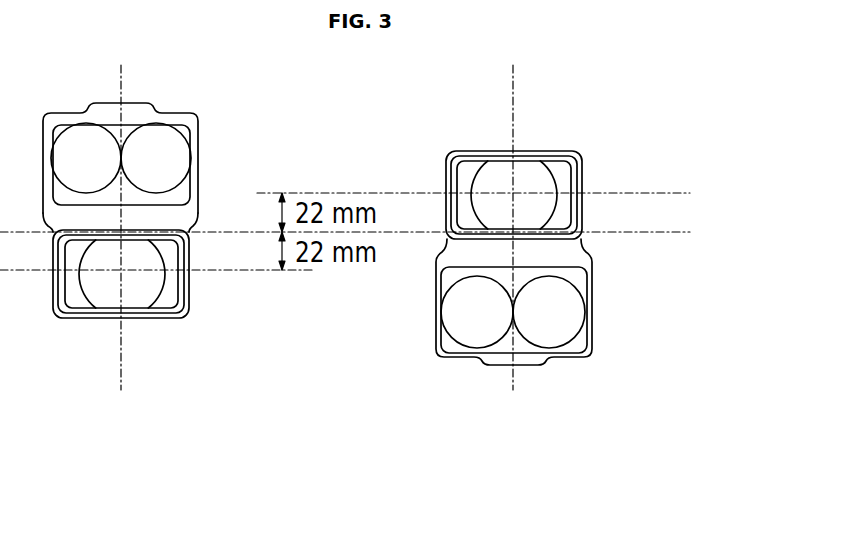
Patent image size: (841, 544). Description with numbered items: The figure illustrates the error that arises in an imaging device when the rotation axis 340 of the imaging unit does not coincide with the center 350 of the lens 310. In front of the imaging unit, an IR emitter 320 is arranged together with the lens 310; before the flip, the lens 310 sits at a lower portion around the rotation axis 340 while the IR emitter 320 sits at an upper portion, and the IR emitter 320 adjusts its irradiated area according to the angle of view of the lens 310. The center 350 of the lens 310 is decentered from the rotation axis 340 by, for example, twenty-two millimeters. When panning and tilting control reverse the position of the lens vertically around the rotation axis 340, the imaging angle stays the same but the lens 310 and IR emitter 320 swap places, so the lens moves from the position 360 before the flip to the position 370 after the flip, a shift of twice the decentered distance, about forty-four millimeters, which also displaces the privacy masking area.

The lens 310 is at (152, 252).
The IR emitter 320 is at (153, 163).
The rotation axis 340 is at (735, 250).
The center of the lens 350 is at (745, 172).
The position before the flip 360 is at (123, 448).
The position after the flip 370 is at (517, 448).